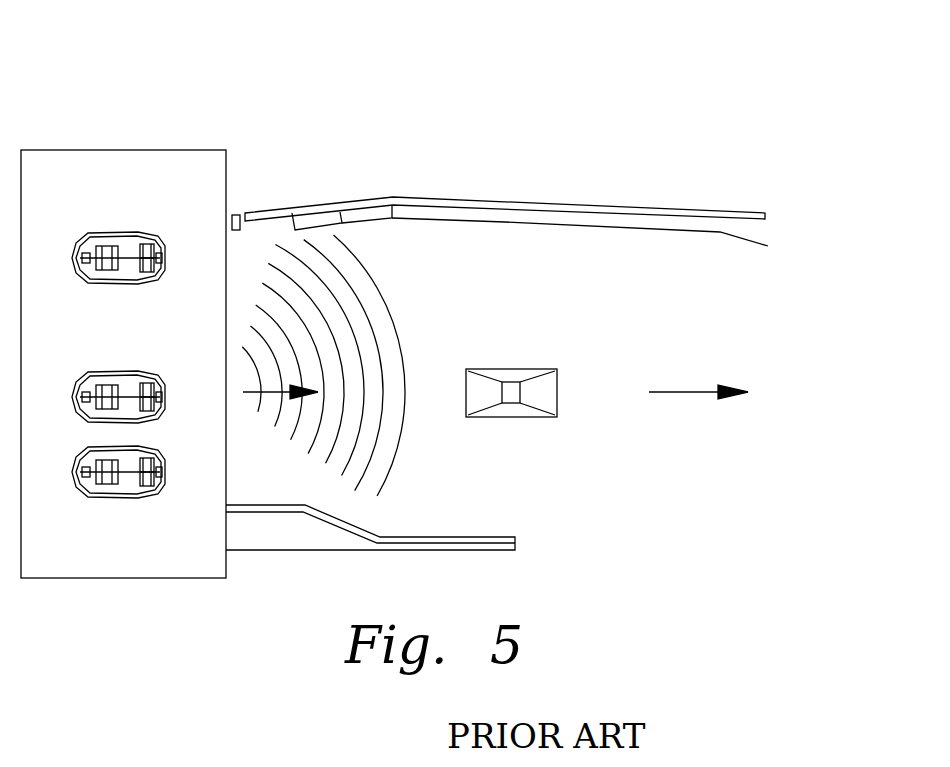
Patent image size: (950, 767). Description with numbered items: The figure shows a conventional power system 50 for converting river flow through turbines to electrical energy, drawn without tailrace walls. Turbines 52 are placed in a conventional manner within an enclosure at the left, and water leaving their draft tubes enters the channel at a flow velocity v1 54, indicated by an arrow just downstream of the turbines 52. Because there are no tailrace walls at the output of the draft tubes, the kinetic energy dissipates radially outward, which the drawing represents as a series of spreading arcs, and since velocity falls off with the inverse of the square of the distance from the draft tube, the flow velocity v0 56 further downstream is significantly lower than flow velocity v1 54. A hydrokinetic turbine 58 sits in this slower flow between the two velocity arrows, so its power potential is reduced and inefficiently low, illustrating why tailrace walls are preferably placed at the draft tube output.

The power system 50 is at (441, 125).
The turbines 52 is at (95, 208).
The flow velocity v1 54 is at (264, 396).
The flow velocity v0 56 is at (697, 393).
The hydrokinetic turbine 58 is at (528, 418).